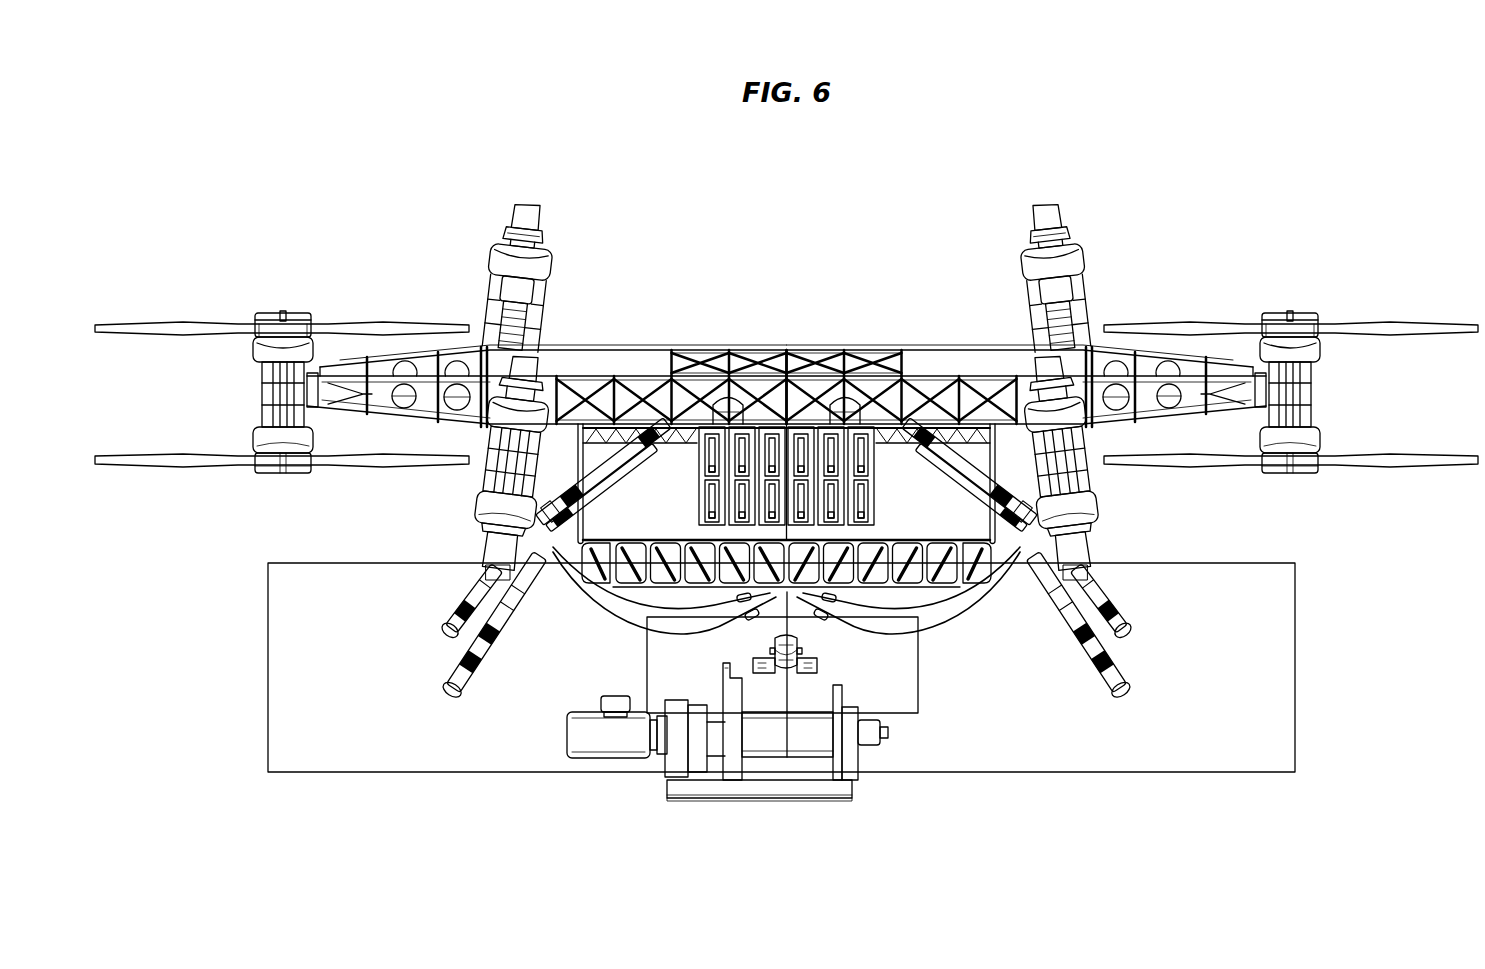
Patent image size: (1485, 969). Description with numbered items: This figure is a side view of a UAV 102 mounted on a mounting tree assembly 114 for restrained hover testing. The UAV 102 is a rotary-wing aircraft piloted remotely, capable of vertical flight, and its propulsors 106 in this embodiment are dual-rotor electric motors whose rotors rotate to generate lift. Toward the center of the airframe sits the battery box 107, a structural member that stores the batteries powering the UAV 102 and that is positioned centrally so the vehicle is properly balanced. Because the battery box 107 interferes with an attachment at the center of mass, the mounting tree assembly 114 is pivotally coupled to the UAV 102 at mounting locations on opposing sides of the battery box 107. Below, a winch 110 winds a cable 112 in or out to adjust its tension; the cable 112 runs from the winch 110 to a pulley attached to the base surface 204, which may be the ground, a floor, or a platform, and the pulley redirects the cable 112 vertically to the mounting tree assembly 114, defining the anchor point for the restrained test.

The UAV 102 is at (815, 272).
The propulsors 106 is at (508, 245).
The battery box 107 is at (876, 488).
The winch 110 is at (858, 790).
The cable 112 is at (790, 630).
The mounting tree assembly 114 is at (656, 540).
The base surface 204 is at (1277, 688).